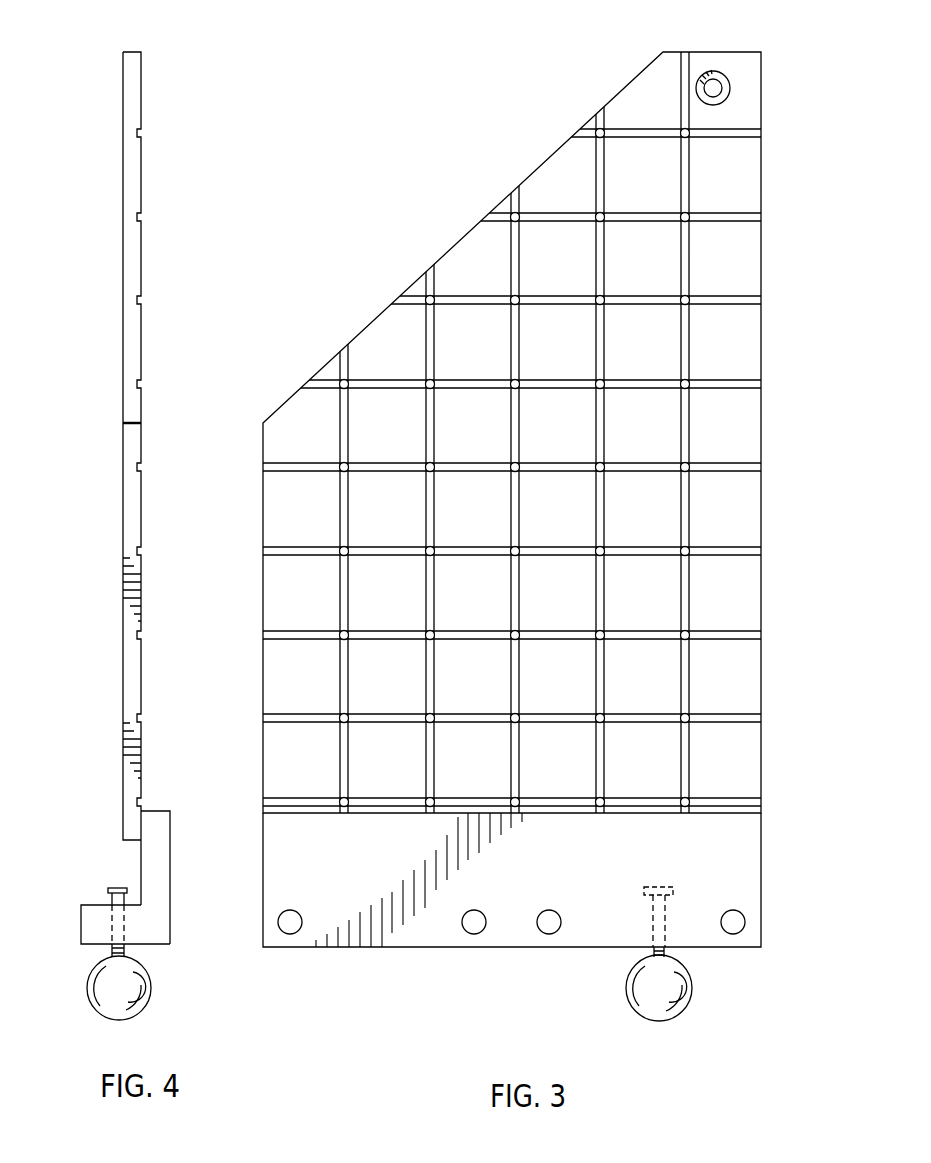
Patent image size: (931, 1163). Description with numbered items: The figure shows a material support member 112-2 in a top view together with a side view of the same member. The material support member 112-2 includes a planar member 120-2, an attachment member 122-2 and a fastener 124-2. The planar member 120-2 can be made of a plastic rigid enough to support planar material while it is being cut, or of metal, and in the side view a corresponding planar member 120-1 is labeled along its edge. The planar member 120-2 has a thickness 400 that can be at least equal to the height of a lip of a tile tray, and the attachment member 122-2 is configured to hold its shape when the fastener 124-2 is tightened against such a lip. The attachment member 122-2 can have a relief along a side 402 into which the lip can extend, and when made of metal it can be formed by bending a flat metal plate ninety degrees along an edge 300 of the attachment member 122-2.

In FIG. 4, the material support member 112-2 is at (50, 220).
In FIG. 3, the material support member 112-2 is at (334, 190).
In FIG. 4, the grid panel (side view) 120-1 is at (133, 272).
In FIG. 3, the planar member 120-2 is at (742, 353).
In FIG. 4, the attachment member 122-2 is at (160, 850).
In FIG. 3, the attachment member 122-2 is at (726, 866).
In FIG. 3, the fastener 124-2 is at (650, 1003).
In FIG. 4, the edge of the attachment member 300 is at (170, 944).
In FIG. 4, the thickness of the planar member 400 is at (90, 30).
In FIG. 4, the side of the attachment member 402 is at (140, 870).